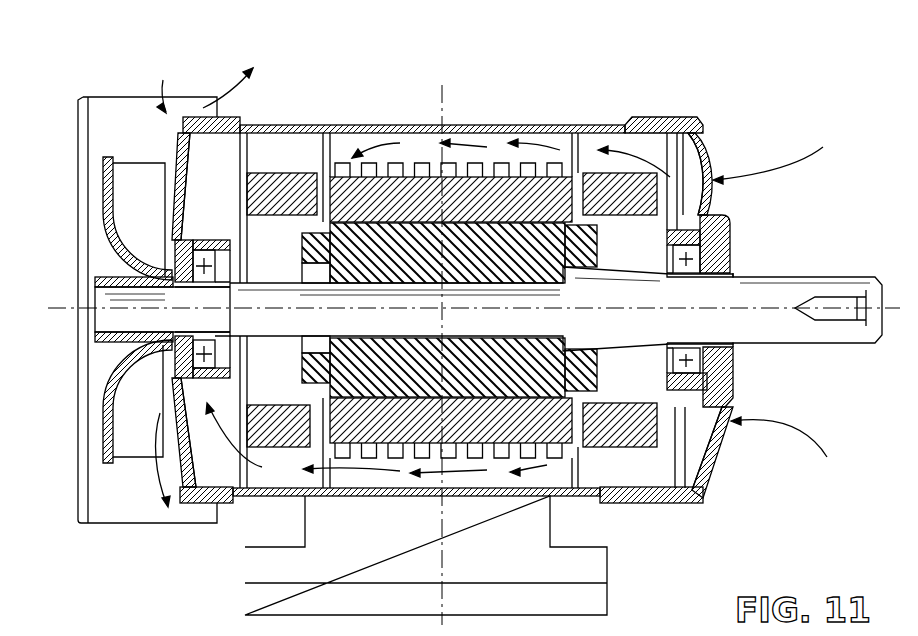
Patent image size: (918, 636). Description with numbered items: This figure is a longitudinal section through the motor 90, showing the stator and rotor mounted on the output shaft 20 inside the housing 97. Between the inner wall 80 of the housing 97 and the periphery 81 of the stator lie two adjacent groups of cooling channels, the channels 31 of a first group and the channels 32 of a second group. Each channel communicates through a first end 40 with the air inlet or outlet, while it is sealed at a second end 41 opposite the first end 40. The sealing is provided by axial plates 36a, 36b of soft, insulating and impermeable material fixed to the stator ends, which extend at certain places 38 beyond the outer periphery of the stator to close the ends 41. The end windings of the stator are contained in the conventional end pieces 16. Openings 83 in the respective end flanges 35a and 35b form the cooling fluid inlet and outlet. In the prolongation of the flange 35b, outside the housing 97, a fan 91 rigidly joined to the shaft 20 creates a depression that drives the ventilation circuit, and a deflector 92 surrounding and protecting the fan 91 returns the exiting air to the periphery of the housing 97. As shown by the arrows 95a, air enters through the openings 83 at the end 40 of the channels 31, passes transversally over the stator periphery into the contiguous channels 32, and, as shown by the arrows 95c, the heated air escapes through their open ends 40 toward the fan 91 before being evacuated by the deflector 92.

The end pieces 16 is at (273, 180).
The output shaft 20 is at (762, 333).
The channels of the first group 31 is at (452, 143).
The channels of the second group 32 is at (466, 473).
The end flange 35a is at (700, 143).
The end flange 35b is at (180, 152).
The axial plate 36a is at (597, 507).
The axial plate 36b is at (270, 497).
The places where plates extend beyond stator periphery 38 is at (336, 127).
The first end of the channels 40 is at (663, 153).
The second end of the channels 41 is at (385, 150).
The inner wall of the housing 80 is at (313, 126).
The periphery of the stator 81 is at (422, 157).
The openings 83 is at (177, 217).
The motor 90 is at (602, 88).
The fan 91 is at (127, 435).
The deflector 92 is at (112, 523).
The arrows 95a is at (553, 140).
The arrows 95c is at (157, 207).
The housing 97 is at (498, 135).